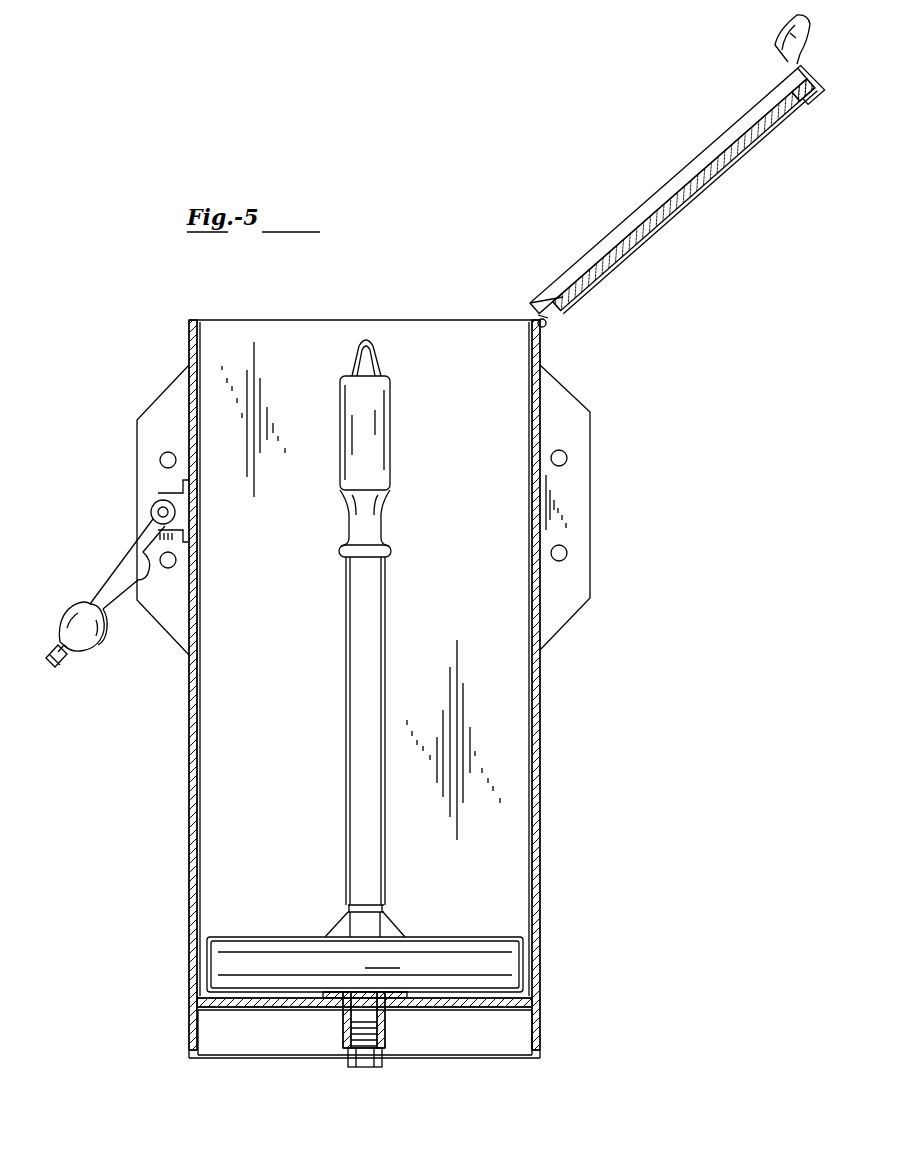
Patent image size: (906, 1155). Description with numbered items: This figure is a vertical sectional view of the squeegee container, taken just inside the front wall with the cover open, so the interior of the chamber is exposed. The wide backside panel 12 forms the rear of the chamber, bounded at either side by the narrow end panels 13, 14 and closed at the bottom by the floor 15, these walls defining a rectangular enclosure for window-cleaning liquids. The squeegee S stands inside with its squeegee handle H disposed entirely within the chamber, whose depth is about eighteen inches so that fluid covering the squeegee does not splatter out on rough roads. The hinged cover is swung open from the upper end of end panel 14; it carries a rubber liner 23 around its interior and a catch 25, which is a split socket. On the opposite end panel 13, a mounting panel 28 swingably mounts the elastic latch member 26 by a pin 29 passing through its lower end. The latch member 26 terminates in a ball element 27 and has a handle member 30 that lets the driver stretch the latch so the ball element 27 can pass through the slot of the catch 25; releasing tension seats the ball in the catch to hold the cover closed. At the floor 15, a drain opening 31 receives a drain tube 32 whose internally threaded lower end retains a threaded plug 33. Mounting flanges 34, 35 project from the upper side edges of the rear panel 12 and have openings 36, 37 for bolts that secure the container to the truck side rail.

The backside panel 12 is at (264, 803).
The end panel 13 is at (190, 820).
The end panel 14 is at (540, 722).
The bottom wall or floor 15 is at (487, 1010).
The rubber liner 23 is at (580, 283).
The catch 25 is at (787, 58).
The latch member 26 is at (93, 583).
The ball element 27 is at (98, 642).
The mounting panel 28 is at (157, 503).
The pivot pin 29 is at (160, 513).
The handle member 30 is at (62, 672).
The drain opening 31 is at (372, 1005).
The drain tube 32 is at (345, 1020).
The threaded plug 33 is at (367, 1066).
The mounting flange 34 is at (160, 395).
The mounting flange 35 is at (572, 605).
The opening 36 is at (168, 568).
The opening 37 is at (160, 460).
The squeegee handle H is at (345, 650).
The squeegee S is at (263, 937).